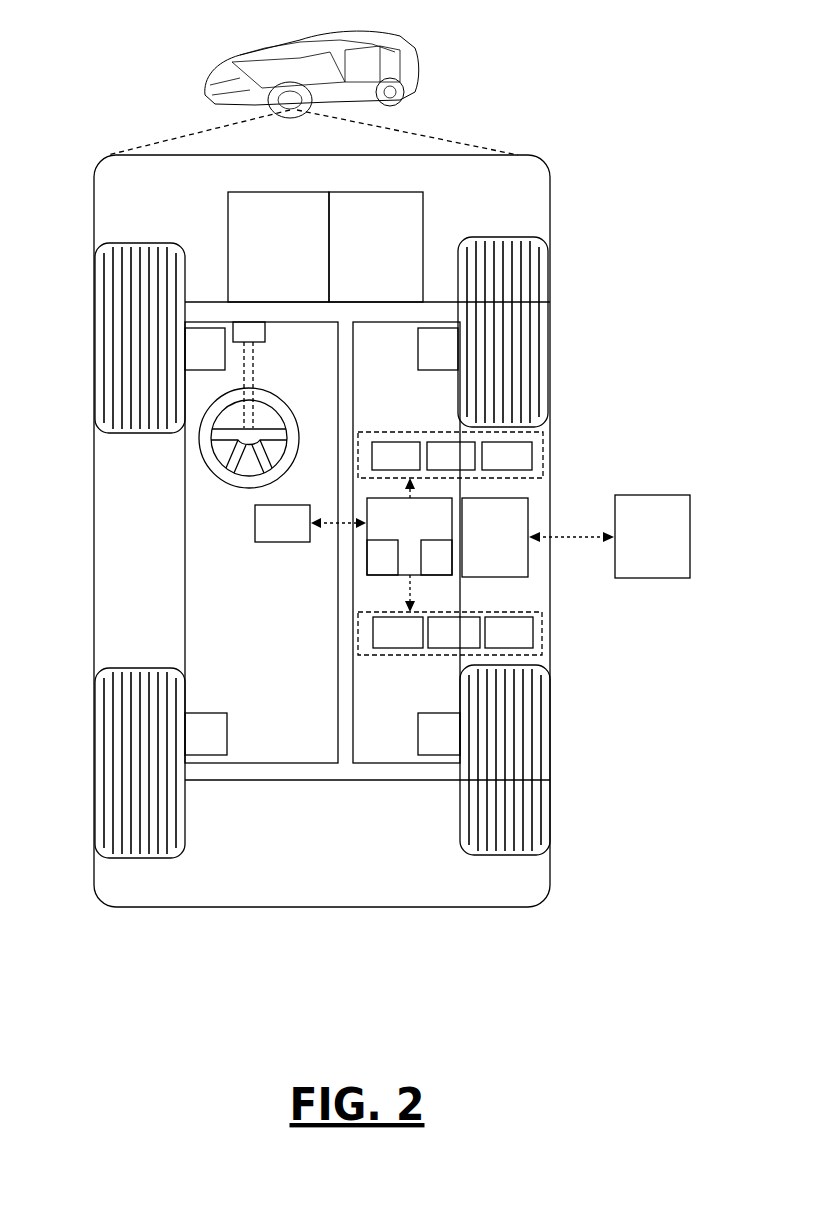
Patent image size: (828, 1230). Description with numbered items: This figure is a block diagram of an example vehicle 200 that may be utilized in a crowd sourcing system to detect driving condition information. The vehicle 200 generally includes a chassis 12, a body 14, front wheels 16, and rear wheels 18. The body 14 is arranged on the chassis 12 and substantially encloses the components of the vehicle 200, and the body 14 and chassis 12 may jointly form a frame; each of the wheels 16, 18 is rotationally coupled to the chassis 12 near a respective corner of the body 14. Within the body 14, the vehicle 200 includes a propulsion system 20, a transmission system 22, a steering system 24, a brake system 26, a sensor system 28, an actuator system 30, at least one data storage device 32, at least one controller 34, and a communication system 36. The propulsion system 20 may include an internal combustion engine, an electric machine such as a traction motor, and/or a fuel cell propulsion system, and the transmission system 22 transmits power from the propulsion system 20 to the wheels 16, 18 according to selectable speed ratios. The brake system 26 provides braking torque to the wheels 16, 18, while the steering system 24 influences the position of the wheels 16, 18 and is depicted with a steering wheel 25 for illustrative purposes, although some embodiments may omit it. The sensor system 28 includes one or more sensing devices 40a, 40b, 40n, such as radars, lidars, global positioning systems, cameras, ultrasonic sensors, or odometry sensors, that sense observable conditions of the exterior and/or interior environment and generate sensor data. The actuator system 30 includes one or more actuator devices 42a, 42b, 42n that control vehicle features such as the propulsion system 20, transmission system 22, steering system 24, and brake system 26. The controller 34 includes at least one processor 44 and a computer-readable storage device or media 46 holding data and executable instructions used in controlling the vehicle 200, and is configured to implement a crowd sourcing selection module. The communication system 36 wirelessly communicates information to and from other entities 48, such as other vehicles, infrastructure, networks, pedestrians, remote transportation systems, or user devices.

The vehicle 200 is at (193, 67).
The body 14 is at (94, 500).
The chassis 12 is at (347, 782).
The front wheels 16 is at (321, 335).
The rear wheels 18 is at (322, 761).
The propulsion system 20 is at (278, 247).
The transmission system 22 is at (376, 247).
The steering system 24 is at (220, 500).
The steering wheel 25 is at (289, 393).
The brake system 26 is at (322, 541).
The sensor system 28 is at (450, 432).
The actuator system 30 is at (450, 655).
The data storage device 32 is at (310, 523).
The controller 34 is at (409, 545).
The communication system 36 is at (538, 537).
The sensing device 40a is at (396, 456).
The sensing device 40b is at (451, 456).
The sensing device 40n is at (507, 456).
The actuator device 42a is at (398, 632).
The actuator device 42b is at (454, 632).
The actuator device 42n is at (509, 632).
The processor 44 is at (382, 557).
The computer-readable storage device or media 46 is at (436, 557).
The other entities 48 is at (652, 536).